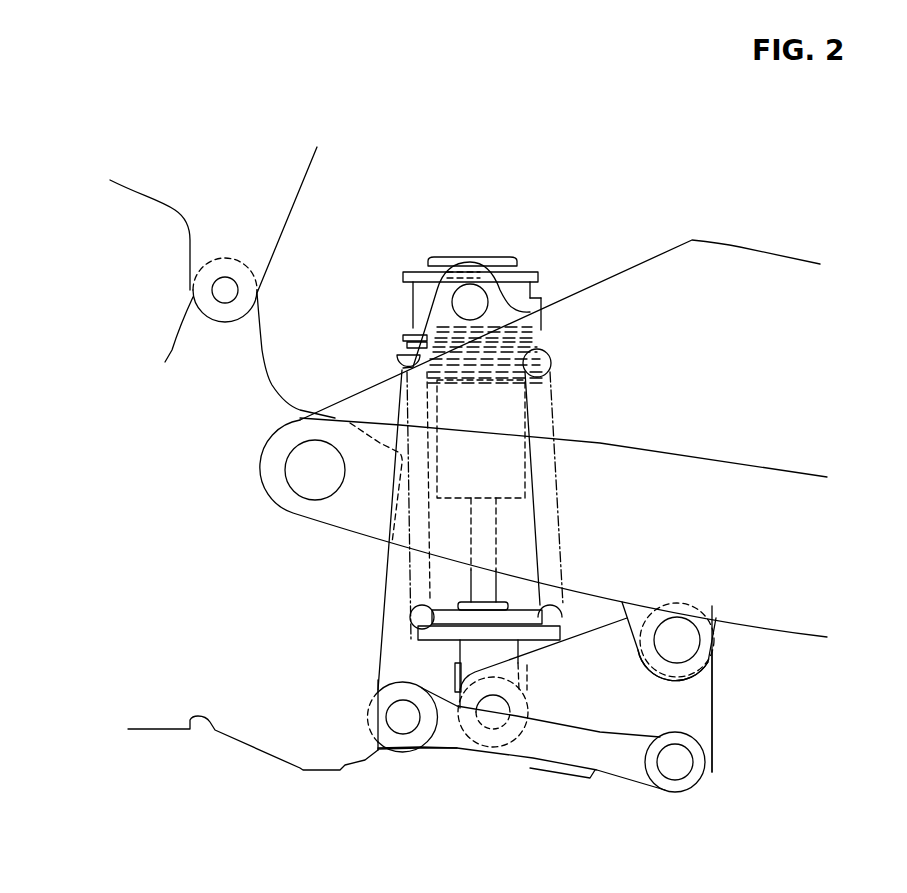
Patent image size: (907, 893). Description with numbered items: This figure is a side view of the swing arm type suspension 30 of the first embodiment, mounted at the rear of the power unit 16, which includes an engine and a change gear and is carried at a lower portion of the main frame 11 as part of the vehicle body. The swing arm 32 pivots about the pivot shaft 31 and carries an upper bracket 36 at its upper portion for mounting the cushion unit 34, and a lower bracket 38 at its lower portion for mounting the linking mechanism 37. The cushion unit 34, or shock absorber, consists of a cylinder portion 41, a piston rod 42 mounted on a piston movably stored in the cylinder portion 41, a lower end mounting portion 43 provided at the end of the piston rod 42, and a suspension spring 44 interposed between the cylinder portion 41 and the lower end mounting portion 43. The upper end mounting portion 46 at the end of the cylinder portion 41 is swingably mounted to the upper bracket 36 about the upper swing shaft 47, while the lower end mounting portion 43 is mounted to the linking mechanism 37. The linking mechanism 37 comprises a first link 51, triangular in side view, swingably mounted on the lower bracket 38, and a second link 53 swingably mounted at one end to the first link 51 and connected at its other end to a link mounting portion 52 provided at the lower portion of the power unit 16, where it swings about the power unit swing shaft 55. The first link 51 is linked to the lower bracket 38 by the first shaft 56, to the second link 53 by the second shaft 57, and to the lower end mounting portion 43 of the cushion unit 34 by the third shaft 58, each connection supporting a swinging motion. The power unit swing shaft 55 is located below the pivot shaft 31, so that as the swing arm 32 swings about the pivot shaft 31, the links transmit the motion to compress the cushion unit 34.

The main frame 11 is at (190, 232).
The power unit 16 is at (205, 738).
The swing arm type suspension 30 is at (262, 196).
The pivot shaft 31 is at (285, 466).
The swing arm 32 is at (700, 243).
The cushion unit 34 is at (430, 256).
The upper bracket 36 is at (520, 298).
The linking mechanism 37 is at (725, 713).
The lower bracket 38 is at (697, 678).
The cylinder portion 41 is at (522, 411).
The piston rod 42 is at (497, 537).
The lower end mounting portion 43 is at (559, 614).
The suspension spring 44 is at (421, 605).
The upper end mounting portion 46 is at (403, 282).
The upper swing shaft 47 is at (488, 287).
The first link 51 is at (714, 734).
The link mounting portion 52 is at (398, 750).
The second link 53 is at (597, 772).
The power unit swing shaft 55 is at (417, 733).
The first shaft 56 is at (680, 618).
The second shaft 57 is at (706, 775).
The third shaft 58 is at (487, 730).